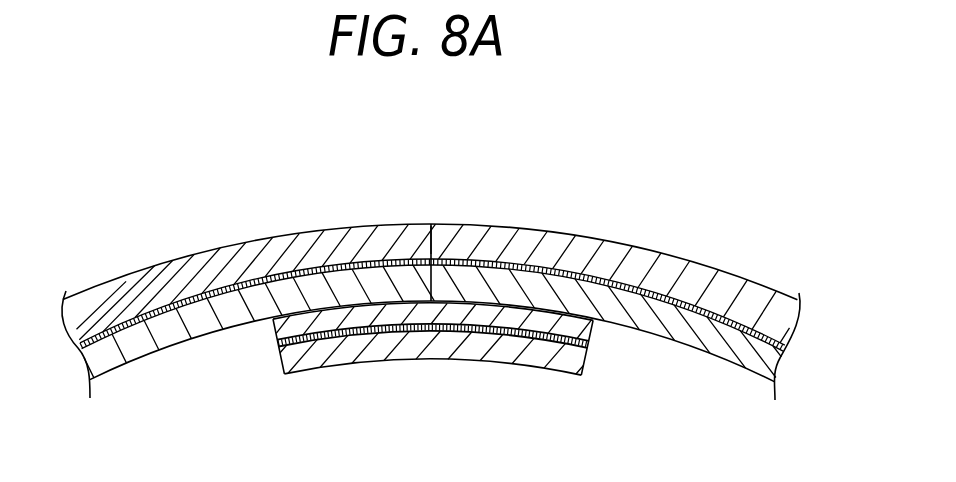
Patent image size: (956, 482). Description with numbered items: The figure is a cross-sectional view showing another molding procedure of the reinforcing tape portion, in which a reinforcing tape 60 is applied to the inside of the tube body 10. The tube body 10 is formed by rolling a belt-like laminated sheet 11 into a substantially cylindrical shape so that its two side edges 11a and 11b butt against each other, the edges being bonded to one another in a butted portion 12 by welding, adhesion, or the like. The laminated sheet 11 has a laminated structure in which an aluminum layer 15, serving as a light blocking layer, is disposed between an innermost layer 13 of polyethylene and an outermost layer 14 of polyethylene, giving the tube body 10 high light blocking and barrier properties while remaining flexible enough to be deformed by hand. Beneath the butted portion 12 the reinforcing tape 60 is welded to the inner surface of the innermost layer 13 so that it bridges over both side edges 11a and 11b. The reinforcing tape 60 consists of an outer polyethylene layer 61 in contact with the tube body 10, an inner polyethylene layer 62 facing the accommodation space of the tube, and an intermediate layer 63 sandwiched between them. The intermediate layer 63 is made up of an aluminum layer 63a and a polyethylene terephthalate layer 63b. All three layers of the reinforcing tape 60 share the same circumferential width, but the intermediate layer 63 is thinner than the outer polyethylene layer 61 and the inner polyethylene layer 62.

The tube body 10 is at (436, 277).
The laminated sheet 11 is at (685, 248).
The side edge 11a is at (433, 247).
The side edge 11b is at (431, 233).
The butted portion 12 is at (430, 213).
The innermost layer 13 is at (140, 347).
The outermost layer 14 is at (210, 263).
The aluminum layer 15 is at (149, 311).
The reinforcing tape 60 is at (439, 323).
The outer polyethylene layer 61 is at (543, 322).
The inner polyethylene layer 62 is at (460, 349).
The intermediate layer 63 is at (432, 307).
The aluminum layer 63a is at (503, 327).
The polyethylene terephthalate layer 63b is at (514, 341).